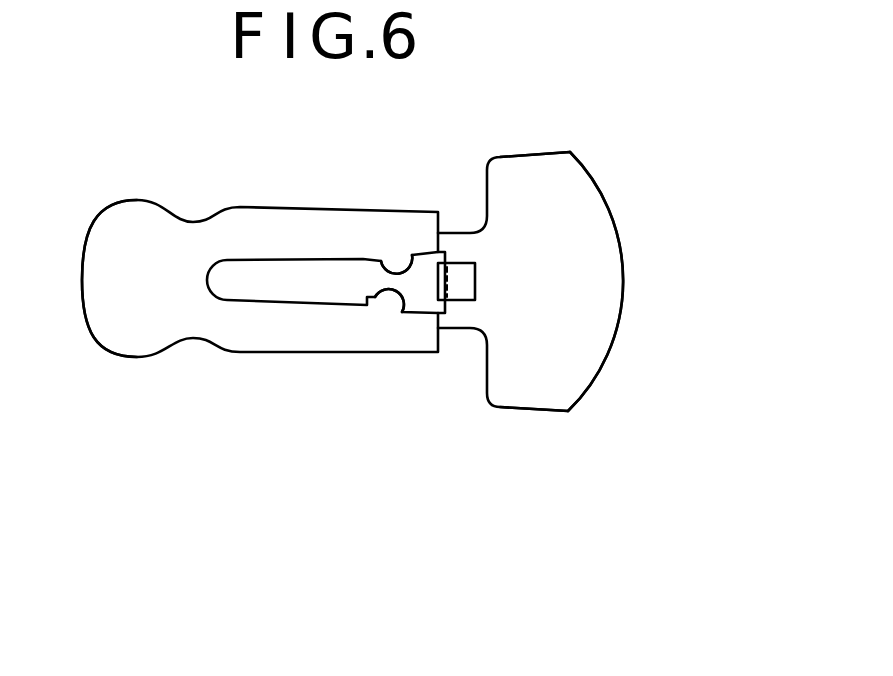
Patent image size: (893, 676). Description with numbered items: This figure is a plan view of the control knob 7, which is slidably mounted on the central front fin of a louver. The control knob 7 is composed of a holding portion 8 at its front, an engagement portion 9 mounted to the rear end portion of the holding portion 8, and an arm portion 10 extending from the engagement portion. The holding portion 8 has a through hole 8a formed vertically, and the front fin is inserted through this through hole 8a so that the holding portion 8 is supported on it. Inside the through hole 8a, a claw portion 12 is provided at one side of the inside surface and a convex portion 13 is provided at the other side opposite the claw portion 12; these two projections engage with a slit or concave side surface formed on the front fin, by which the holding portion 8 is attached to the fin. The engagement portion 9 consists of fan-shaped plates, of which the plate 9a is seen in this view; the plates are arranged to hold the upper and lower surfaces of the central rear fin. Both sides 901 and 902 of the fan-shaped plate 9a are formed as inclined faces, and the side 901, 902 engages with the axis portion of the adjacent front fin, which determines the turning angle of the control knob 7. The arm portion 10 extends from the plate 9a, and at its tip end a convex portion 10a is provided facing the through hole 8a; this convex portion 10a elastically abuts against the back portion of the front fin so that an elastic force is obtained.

The control knob 7 is at (95, 257).
The holding portion 8 is at (138, 320).
The through hole 8a is at (288, 283).
The engagement portion 9 is at (592, 230).
The plate (fan-shaped portion) 9a is at (592, 292).
The arm portion 10 is at (462, 283).
The convex portion 10a is at (442, 278).
The claw portion 12 is at (402, 297).
The convex portion 13 is at (412, 255).
The side 901 is at (528, 153).
The side 902 is at (538, 412).